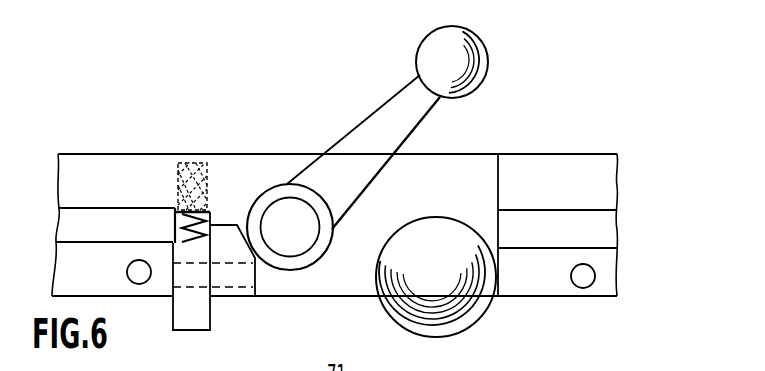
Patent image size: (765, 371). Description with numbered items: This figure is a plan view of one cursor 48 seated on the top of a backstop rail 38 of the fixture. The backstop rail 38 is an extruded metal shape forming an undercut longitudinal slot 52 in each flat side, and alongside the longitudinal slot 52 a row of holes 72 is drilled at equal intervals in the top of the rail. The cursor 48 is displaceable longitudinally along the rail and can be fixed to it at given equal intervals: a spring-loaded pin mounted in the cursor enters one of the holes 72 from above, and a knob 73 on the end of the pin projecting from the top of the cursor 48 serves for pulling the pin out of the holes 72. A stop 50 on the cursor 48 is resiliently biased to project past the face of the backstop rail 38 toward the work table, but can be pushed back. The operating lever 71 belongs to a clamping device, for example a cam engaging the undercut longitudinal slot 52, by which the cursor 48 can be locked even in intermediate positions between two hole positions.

The backstop rail 38 is at (607, 154).
The cursor 48 is at (247, 171).
The stop 50 is at (193, 318).
The undercut longitudinal slot 52 is at (594, 248).
The operating lever 71 is at (378, 125).
The holes 72 is at (128, 270).
The knob 73 is at (460, 298).